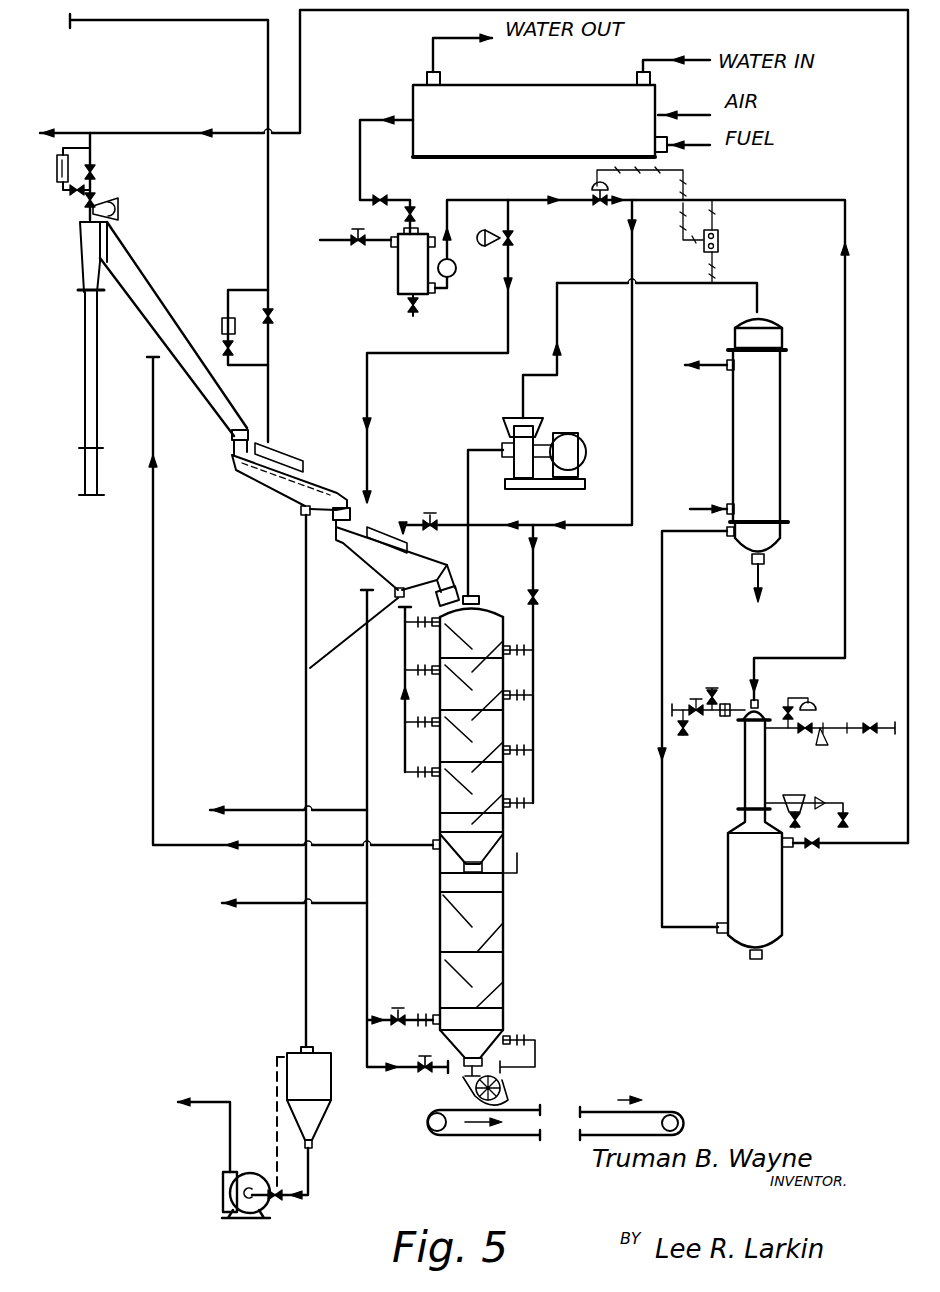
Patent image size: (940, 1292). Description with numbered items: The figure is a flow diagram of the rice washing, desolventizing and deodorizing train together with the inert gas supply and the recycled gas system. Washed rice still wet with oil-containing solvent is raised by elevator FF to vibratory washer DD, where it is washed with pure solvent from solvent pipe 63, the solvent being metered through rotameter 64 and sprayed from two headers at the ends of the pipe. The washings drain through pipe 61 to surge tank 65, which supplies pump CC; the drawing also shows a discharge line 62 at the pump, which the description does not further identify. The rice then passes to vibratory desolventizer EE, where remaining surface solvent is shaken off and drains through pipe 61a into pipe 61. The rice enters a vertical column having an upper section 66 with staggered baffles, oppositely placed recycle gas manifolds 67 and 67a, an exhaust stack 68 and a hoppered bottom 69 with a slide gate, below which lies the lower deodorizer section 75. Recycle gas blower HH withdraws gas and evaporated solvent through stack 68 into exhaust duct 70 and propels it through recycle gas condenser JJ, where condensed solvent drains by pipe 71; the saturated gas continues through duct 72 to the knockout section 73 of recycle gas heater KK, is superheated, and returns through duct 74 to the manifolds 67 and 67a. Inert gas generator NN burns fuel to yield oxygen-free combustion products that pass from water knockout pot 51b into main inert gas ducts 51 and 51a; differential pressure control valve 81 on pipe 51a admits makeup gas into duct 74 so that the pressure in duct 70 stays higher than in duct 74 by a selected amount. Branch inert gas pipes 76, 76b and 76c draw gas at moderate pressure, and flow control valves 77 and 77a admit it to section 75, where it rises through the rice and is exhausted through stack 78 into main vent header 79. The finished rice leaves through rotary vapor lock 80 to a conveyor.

The main inert gas duct 51 is at (378, 243).
The main inert gas duct 51a is at (546, 200).
The water knockout pot 51b is at (402, 270).
The pipe 61 is at (306, 731).
The pipe 61a is at (318, 652).
The blower discharge line 62 is at (206, 1100).
The solvent pipe 63 is at (152, 21).
The rotameter 64 is at (222, 318).
The surge tank 65 is at (300, 1077).
The upper section 66 is at (505, 622).
The recycle gas manifold 67 is at (400, 703).
The recycle gas manifold 67a is at (537, 673).
The exhaust stack 68 is at (479, 598).
The hoppered bottom 69 is at (478, 848).
The exhaust duct 70 is at (586, 283).
The pipe 71 is at (766, 573).
The duct 72 is at (662, 645).
The knockout section 73 is at (755, 905).
The duct 74 is at (757, 200).
The lower deodorizer section 75 is at (505, 957).
The branch inert gas pipe 76 is at (372, 879).
The branch inert gas pipe 76b is at (278, 906).
The branch inert gas pipe 76c is at (291, 808).
The flow control valve 77 is at (398, 1008).
The flow control valve 77a is at (420, 1078).
The stack 78 is at (393, 845).
The main vent header 79 is at (116, 133).
The rotary vapor lock 80 is at (501, 1091).
The differential pressure control valve 81 is at (598, 192).
The inert gas generator NN is at (548, 132).
The elevator FF is at (87, 403).
The vibratory washer DD is at (268, 487).
The vibratory desolventizer EE is at (372, 567).
The recycle gas blower HH is at (552, 420).
The recycle gas condenser JJ is at (734, 438).
The recycle gas heater KK is at (770, 778).
The pump CC is at (218, 1206).